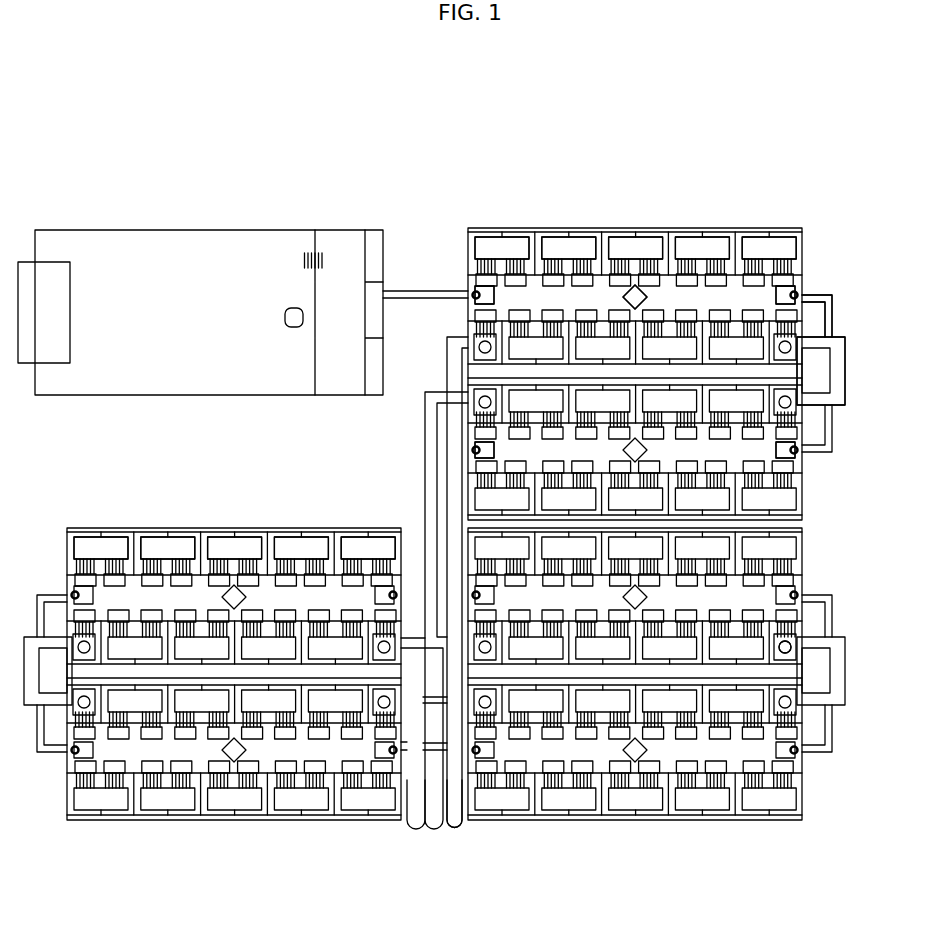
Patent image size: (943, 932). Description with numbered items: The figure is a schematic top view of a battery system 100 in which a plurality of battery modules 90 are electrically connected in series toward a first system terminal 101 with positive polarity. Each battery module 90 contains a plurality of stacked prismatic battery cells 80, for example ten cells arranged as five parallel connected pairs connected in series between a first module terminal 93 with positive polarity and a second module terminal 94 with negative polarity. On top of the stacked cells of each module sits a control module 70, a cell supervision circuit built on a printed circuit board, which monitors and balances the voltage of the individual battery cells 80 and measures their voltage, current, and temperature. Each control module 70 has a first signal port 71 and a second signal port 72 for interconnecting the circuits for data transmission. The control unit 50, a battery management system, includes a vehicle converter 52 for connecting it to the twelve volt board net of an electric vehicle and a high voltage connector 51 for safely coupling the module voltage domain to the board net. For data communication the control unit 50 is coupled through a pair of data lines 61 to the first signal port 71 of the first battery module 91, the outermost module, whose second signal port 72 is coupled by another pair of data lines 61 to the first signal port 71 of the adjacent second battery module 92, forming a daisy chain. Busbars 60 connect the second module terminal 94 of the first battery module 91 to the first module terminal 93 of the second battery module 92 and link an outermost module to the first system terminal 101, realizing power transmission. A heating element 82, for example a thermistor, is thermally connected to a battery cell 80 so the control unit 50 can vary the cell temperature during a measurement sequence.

The battery system 100 is at (146, 156).
The control unit 50 is at (210, 230).
The high voltage connector 51 is at (345, 230).
The vehicle converter 52 is at (62, 262).
The pair of data lines 61 is at (387, 292).
The busbar 60 is at (845, 372).
The battery cell 80 is at (548, 228).
The heating element 82 is at (633, 288).
The battery module 90 is at (688, 222).
The first battery module 91 is at (787, 228).
The first signal port 71 is at (475, 296).
The second signal port 72 is at (796, 296).
The first module terminal 93 is at (465, 336).
The second module terminal 94 is at (467, 392).
The second battery module 92 is at (478, 430).
The control module 70 is at (753, 453).
The first system terminal 101 is at (416, 832).